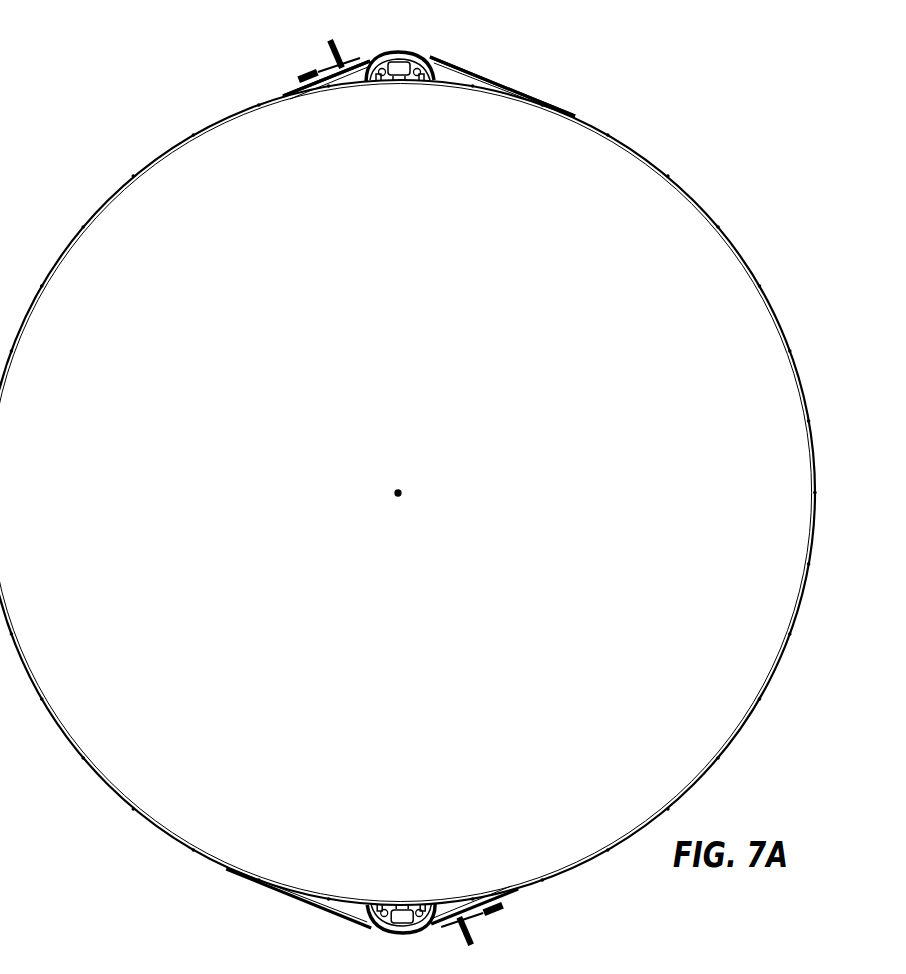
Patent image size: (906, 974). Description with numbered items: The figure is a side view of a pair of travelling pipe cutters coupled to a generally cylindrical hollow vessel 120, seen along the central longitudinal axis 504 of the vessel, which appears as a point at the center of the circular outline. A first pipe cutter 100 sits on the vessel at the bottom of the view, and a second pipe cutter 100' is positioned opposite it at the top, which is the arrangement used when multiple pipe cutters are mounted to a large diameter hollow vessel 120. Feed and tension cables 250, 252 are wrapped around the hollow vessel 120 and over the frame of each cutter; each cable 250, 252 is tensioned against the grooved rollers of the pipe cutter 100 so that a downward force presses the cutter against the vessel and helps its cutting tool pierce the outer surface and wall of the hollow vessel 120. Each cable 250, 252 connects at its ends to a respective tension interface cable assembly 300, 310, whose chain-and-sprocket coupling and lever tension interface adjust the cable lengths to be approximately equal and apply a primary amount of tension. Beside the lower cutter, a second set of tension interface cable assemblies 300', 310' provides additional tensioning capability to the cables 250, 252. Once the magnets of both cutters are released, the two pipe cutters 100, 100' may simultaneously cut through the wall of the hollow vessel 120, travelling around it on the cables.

The hollow vessel 120 is at (707, 768).
The central longitudinal axis 504 is at (400, 488).
The cable 250 is at (477, 77).
The feed cable 252 is at (442, 86).
The pipe cutter 100' is at (444, 56).
The tension interface cable assembly 300 is at (274, 59).
The tension interface cable assembly 310 is at (266, 52).
The pipe cutter 100 is at (372, 904).
The tension interface cable assembly 300' is at (523, 927).
The tension interface cable assembly 310' is at (531, 934).